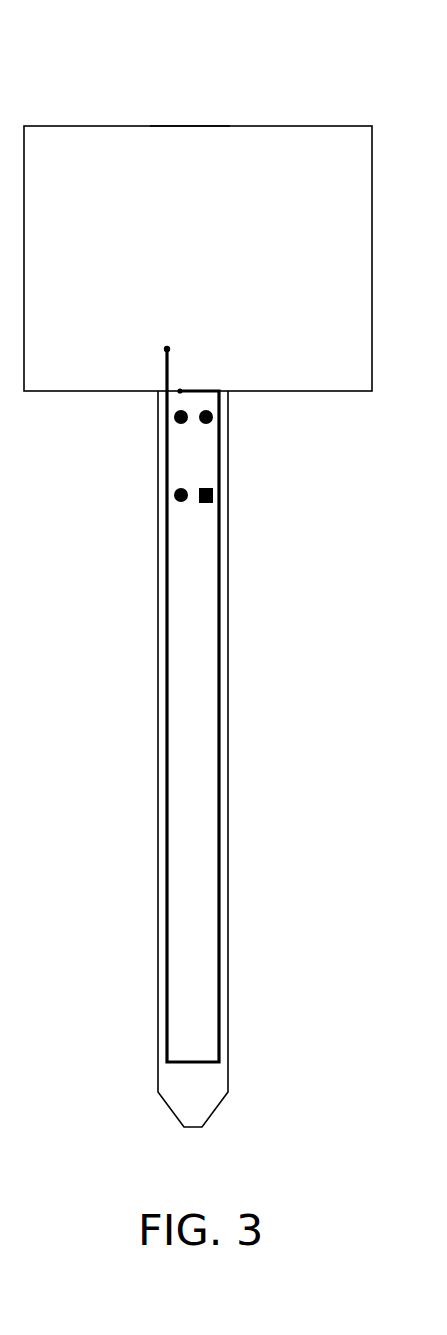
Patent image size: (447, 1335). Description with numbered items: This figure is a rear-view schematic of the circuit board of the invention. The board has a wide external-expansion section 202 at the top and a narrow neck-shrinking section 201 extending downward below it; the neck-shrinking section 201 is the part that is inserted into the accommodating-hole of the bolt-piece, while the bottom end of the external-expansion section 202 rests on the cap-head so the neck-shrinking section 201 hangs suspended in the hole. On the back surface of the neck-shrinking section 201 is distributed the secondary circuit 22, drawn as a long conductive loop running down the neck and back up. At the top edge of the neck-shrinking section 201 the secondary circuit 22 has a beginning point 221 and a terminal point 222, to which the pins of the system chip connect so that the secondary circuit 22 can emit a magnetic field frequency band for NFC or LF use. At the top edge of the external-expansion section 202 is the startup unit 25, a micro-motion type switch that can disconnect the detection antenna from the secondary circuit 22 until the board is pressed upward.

The startup unit 25 is at (190, 126).
The external-expansion section 202 is at (318, 145).
The neck-shrinking section 201 is at (228, 785).
The secondary circuit 22 is at (168, 607).
The beginning point 221 is at (206, 422).
The terminal point 222 is at (181, 422).